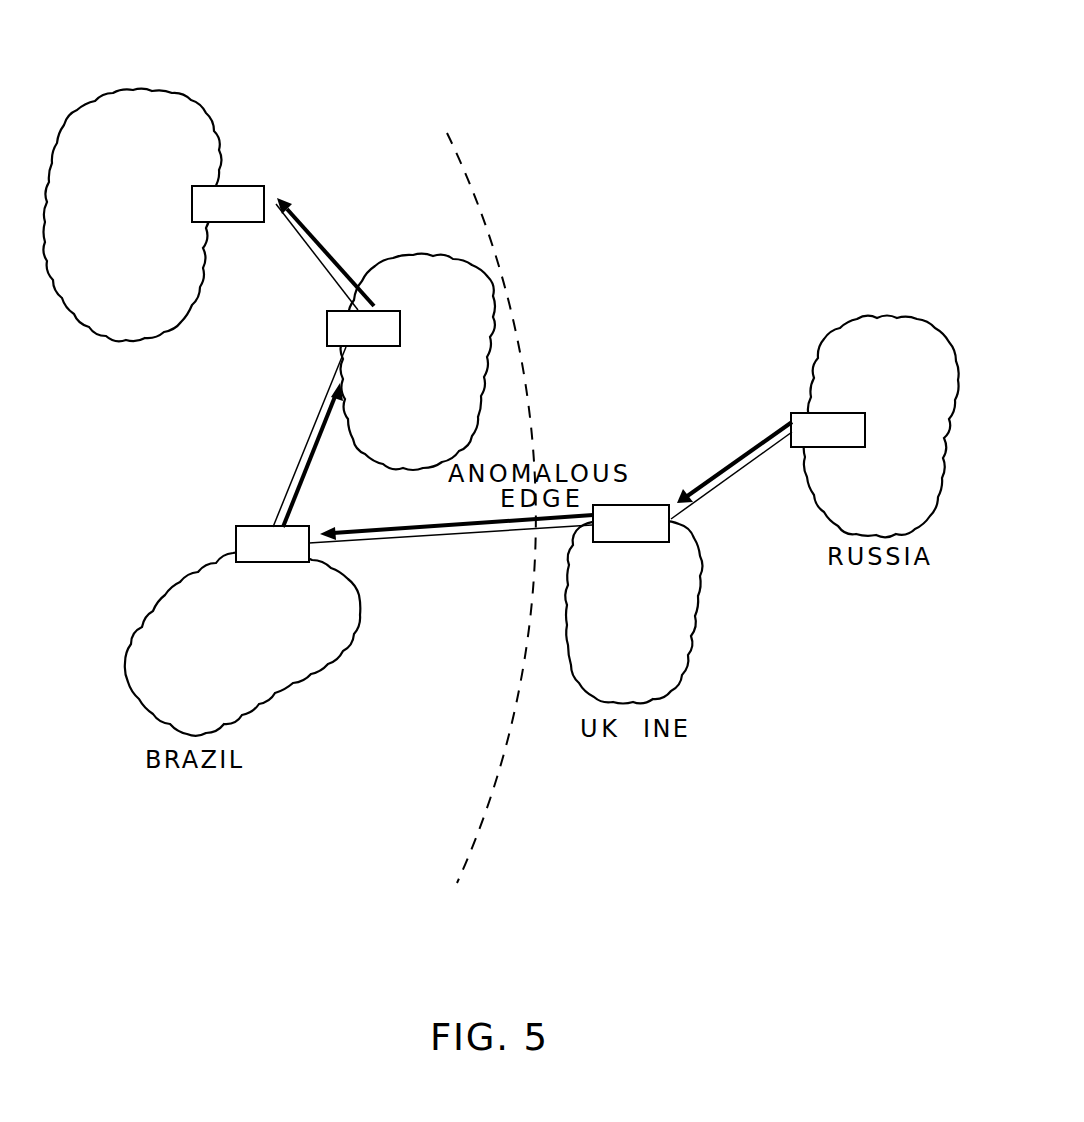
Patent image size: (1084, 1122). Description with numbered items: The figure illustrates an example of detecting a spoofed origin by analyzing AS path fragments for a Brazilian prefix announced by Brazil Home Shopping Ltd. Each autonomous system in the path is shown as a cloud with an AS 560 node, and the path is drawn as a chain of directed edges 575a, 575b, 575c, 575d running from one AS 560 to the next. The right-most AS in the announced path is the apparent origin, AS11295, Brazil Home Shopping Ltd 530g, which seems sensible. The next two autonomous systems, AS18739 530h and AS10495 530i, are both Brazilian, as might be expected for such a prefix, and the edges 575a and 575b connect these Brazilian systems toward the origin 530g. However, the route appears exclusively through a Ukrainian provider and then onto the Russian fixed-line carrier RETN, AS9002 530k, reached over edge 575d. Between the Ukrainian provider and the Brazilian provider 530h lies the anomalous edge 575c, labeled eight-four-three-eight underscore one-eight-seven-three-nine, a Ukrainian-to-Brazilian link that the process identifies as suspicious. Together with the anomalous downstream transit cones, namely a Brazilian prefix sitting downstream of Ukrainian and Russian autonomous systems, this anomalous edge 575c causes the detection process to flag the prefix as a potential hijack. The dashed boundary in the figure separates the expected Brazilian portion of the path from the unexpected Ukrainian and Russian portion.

The apparent origin AS (AS11295, Brazil Home Shopping Ltd) 530g is at (172, 92).
The Brazilian AS (AS18739) 530h is at (500, 277).
The Brazilian AS (AS10495) 530i is at (260, 703).
The Russian fixed-line carrier AS (RETN, AS9002) 530k is at (878, 318).
The AS 560 is at (528, 374).
The network path edge 575a is at (318, 264).
The network path edge 575b is at (304, 439).
The anomalous edge 575c is at (483, 535).
The network path edge 575d is at (755, 458).